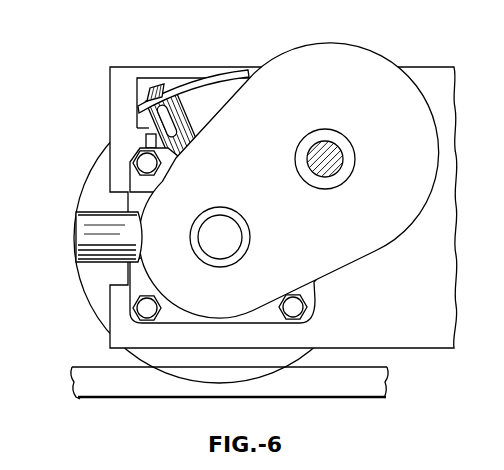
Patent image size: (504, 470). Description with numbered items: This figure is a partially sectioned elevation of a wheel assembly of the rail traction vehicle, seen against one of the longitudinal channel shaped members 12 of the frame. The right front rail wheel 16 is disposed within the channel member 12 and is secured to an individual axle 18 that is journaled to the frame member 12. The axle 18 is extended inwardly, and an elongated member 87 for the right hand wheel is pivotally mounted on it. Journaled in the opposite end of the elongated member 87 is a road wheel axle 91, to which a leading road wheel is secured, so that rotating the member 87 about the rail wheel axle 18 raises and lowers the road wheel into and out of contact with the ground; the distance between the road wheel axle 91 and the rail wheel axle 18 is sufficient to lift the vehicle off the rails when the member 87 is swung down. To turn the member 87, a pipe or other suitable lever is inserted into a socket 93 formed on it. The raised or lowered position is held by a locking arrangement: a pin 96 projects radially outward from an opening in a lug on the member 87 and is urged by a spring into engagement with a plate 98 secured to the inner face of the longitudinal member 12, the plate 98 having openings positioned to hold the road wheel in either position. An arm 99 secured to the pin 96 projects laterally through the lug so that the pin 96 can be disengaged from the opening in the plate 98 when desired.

The longitudinal channel shaped member 12 is at (415, 335).
The right front rail wheel 16 is at (92, 295).
The axle 18 is at (228, 236).
The elongated member 87 is at (340, 30).
The road wheel axle 91 is at (332, 156).
The socket 93 is at (83, 248).
The pin 96 is at (156, 86).
The plate 98 is at (216, 80).
The arm 99 is at (168, 114).